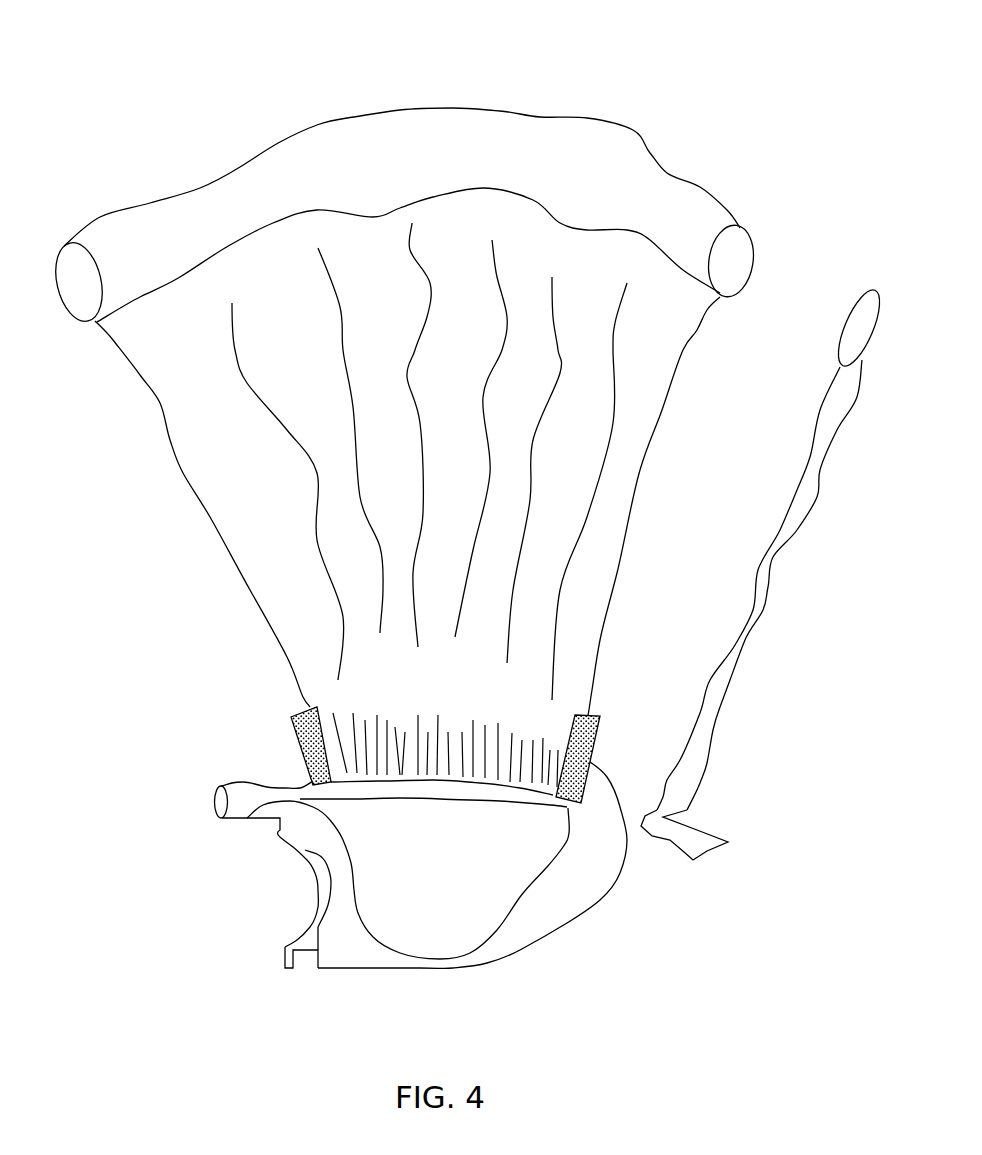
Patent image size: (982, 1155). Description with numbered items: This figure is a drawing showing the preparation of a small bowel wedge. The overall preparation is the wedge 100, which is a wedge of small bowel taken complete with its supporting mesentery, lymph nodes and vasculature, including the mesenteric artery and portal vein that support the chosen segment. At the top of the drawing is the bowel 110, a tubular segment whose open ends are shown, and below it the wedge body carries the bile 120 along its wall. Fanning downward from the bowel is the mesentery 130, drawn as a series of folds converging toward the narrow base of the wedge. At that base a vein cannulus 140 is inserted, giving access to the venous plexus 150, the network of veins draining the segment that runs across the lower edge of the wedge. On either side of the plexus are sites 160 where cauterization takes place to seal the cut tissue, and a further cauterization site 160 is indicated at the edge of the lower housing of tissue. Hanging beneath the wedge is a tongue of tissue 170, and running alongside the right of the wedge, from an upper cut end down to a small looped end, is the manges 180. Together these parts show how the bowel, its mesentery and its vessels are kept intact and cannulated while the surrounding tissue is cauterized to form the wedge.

The wedge 100 is at (399, 363).
The bowel 110 is at (585, 100).
The bile 120 is at (124, 420).
The mesentery 130 is at (243, 500).
The vein cannulus 140 is at (203, 814).
The venous plexus 150 is at (405, 757).
The cauterization site 160 is at (277, 752).
The tongue of tissue 170 is at (478, 903).
The manges 180 is at (732, 853).